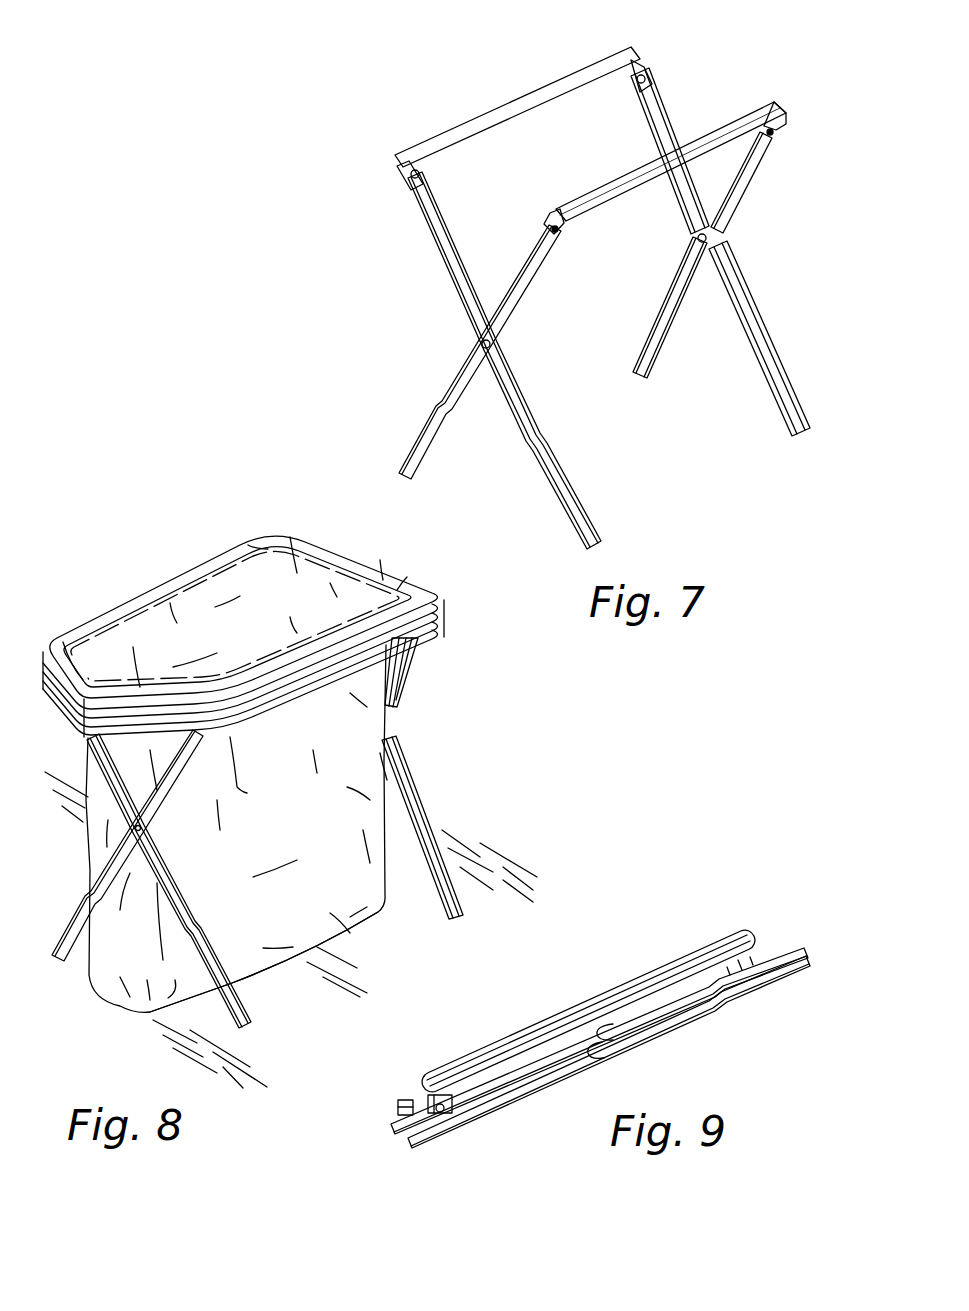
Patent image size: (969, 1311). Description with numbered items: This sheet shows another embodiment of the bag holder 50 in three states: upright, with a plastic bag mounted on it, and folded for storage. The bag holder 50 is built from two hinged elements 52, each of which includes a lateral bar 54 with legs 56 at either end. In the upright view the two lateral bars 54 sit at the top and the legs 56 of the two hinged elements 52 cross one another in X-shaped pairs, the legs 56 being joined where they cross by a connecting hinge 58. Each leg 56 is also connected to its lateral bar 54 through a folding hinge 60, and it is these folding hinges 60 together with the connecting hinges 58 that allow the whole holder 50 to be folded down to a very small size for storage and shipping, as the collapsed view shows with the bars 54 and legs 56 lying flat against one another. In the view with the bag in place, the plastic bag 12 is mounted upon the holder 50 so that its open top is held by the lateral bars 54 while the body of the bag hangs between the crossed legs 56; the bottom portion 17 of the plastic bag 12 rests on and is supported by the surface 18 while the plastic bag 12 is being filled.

In FIG. 7, the bag holder 50 is at (756, 76).
In FIG. 8, the bag holder 50 is at (131, 526).
In FIG. 9, the bag holder 50 is at (646, 900).
In FIG. 7, the hinged element 52 is at (678, 67).
In FIG. 7, the lateral bar 54 is at (478, 123).
In FIG. 7, the leg 56 is at (517, 293).
In FIG. 7, the connecting hinge 58 is at (492, 344).
In FIG. 7, the folding hinge 60 is at (559, 231).
In FIG. 8, the plastic bag 12 is at (360, 732).
In FIG. 8, the bottom portion 17 is at (347, 927).
In FIG. 8, the surface 18 is at (283, 1004).